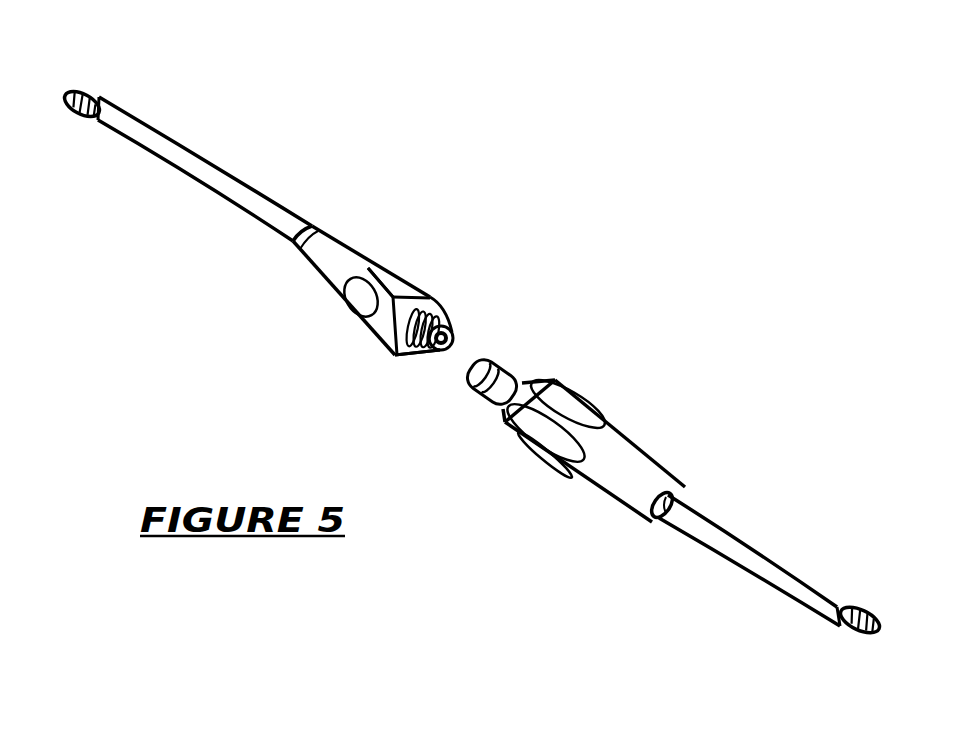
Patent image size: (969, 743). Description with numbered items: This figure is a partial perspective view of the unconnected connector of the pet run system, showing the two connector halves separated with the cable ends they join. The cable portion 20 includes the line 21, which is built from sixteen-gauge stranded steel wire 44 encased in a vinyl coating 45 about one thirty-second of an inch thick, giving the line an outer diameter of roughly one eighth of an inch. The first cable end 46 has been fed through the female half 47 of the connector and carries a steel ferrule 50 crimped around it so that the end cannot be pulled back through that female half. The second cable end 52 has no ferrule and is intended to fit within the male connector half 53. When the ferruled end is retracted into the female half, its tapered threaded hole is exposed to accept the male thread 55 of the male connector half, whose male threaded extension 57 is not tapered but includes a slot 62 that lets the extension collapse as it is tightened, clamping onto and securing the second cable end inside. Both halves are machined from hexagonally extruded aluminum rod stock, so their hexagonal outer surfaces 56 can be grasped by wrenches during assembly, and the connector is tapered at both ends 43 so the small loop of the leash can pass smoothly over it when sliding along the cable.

The cable portion 20 is at (180, 137).
The line 21 is at (173, 163).
The tapered ends 43 is at (308, 222).
The stranded steel wire 44 is at (80, 93).
The vinyl coating 45 is at (97, 123).
The first cable end 46 is at (472, 358).
The female half of the connector 47 is at (600, 417).
The steel ferrule 50 is at (488, 350).
The second cable end 52 is at (462, 330).
The male connector half 53 is at (397, 267).
The male thread 55 is at (433, 287).
The hexagonal outer surfaces 56 is at (365, 300).
The male threaded extension 57 is at (425, 350).
The slot 62 is at (388, 318).